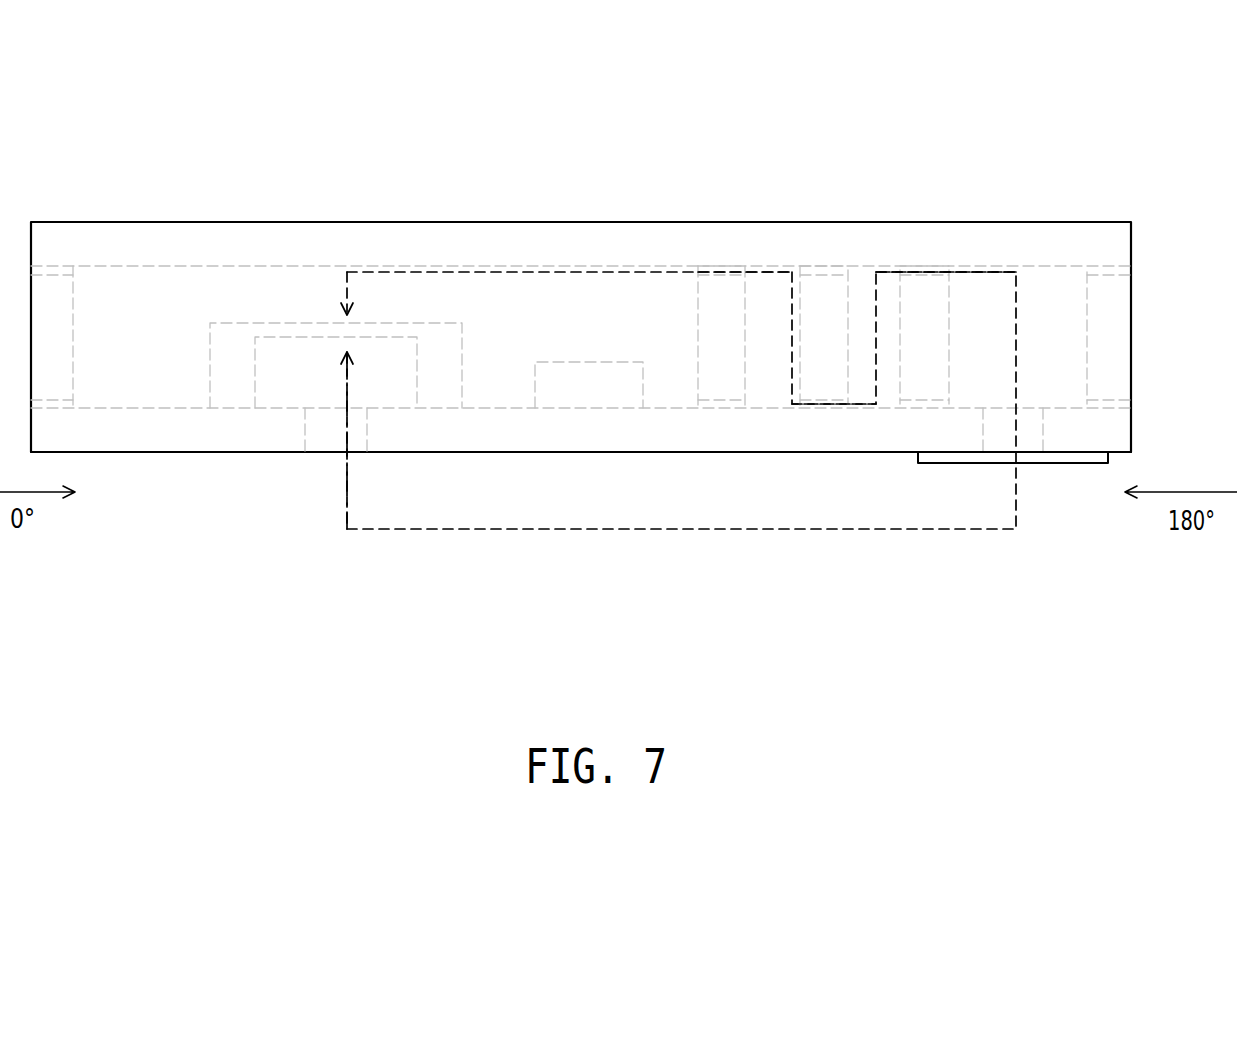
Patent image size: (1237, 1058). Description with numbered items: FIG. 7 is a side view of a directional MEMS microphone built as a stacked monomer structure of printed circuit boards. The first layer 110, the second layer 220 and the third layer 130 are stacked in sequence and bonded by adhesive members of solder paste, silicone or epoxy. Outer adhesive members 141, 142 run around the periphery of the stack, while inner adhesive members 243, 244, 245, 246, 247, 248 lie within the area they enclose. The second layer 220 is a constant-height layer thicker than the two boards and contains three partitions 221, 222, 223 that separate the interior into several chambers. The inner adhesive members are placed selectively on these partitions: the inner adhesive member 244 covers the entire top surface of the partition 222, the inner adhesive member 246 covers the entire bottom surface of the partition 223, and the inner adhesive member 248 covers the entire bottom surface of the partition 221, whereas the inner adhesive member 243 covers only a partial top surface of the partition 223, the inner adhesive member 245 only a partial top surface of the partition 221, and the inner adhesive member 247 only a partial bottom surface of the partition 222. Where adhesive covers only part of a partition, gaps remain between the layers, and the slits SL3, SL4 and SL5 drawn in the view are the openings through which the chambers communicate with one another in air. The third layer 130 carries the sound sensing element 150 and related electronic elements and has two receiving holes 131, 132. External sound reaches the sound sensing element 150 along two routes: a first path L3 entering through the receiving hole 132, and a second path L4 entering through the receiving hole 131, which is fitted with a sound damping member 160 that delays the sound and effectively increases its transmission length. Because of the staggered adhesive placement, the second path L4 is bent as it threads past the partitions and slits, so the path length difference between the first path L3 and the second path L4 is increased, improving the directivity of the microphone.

The first layer 110 is at (1110, 243).
The outer adhesive member 141 is at (1110, 272).
The outer adhesive member 142 is at (1110, 402).
The second layer 220 is at (1120, 317).
The third layer 130 is at (1115, 433).
The receiving hole 131 is at (1032, 404).
The receiving hole 132 is at (326, 466).
The sound sensing element 150 is at (257, 325).
The sound damping member 160 is at (1070, 463).
The partition 222 is at (836, 302).
The partition 223 is at (712, 375).
The partition 221 is at (935, 347).
The inner adhesive member 243 is at (742, 268).
The inner adhesive member 244 is at (819, 268).
The inner adhesive member 245 is at (906, 277).
The inner adhesive member 246 is at (707, 405).
The inner adhesive member 247 is at (837, 405).
The inner adhesive member 248 is at (925, 403).
The third signal path SL3 is at (968, 283).
The fourth signal path SL4 is at (691, 260).
The fifth signal path SL5 is at (779, 411).
The first path L3 is at (328, 402).
The second path L4 is at (681, 424).